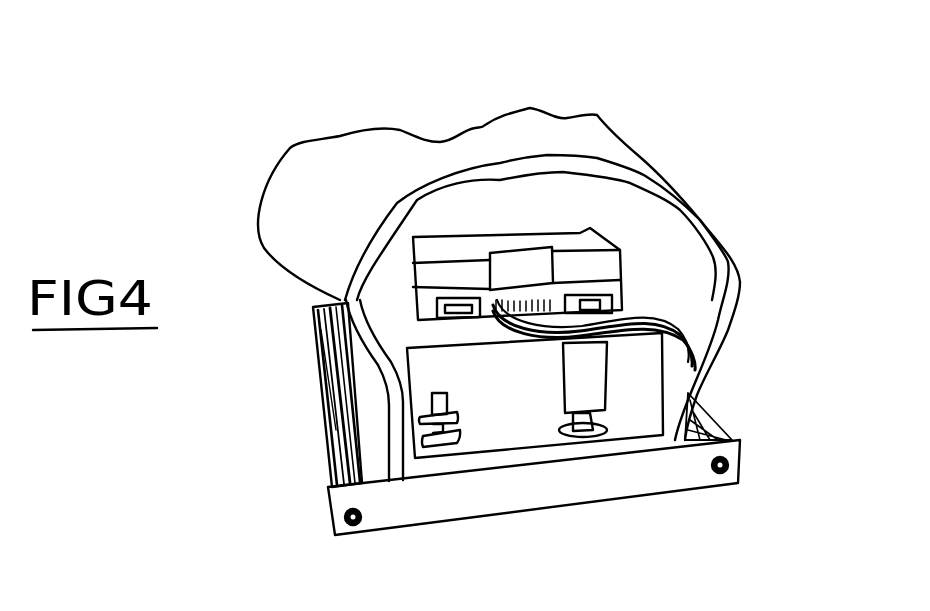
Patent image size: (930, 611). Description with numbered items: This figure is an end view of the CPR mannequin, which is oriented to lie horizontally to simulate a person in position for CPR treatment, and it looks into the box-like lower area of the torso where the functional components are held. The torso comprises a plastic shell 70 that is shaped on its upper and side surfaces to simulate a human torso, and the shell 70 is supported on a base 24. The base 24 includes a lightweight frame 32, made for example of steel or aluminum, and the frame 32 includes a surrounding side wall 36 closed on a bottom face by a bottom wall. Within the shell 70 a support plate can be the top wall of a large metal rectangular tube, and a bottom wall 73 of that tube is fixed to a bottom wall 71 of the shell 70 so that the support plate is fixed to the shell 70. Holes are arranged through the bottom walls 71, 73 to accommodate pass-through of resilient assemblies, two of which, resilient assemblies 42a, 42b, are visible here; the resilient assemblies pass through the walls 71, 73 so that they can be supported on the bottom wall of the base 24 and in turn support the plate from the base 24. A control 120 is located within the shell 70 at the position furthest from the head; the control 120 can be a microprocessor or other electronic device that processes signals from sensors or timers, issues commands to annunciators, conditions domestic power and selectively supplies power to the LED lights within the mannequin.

The plastic shell 70 is at (530, 147).
The control 120 is at (580, 246).
The frame 32 is at (330, 376).
The base 24 is at (327, 462).
The bottom wall of the shell 71 is at (507, 453).
The resilient assembly 42a is at (458, 410).
The resilient assembly 42b is at (590, 380).
The bottom wall of the tube 73 is at (523, 437).
The side wall 36 is at (733, 453).